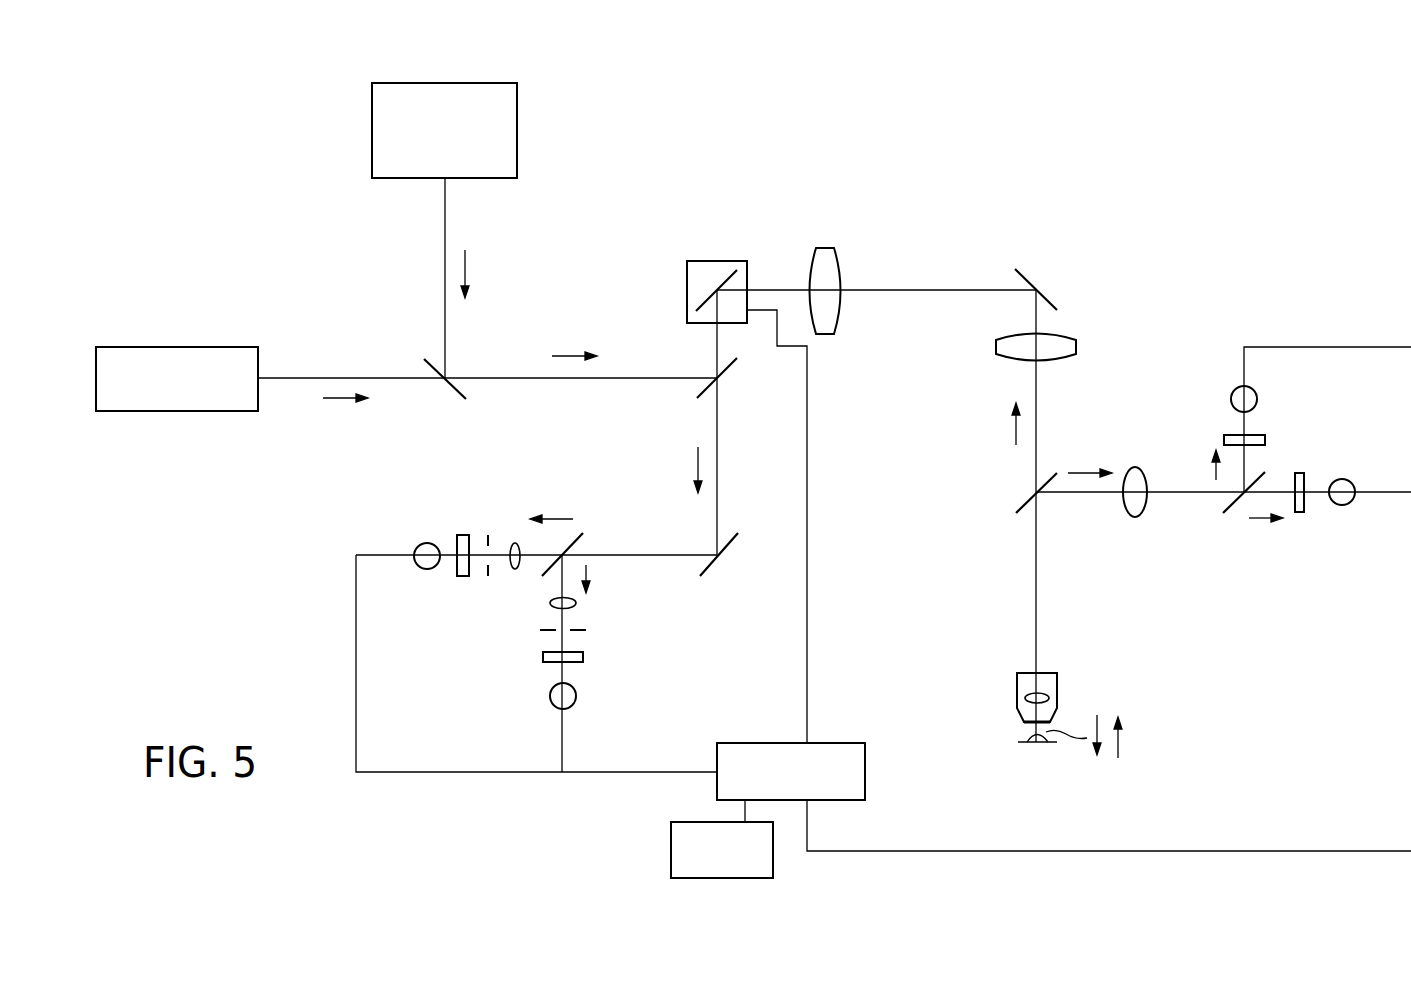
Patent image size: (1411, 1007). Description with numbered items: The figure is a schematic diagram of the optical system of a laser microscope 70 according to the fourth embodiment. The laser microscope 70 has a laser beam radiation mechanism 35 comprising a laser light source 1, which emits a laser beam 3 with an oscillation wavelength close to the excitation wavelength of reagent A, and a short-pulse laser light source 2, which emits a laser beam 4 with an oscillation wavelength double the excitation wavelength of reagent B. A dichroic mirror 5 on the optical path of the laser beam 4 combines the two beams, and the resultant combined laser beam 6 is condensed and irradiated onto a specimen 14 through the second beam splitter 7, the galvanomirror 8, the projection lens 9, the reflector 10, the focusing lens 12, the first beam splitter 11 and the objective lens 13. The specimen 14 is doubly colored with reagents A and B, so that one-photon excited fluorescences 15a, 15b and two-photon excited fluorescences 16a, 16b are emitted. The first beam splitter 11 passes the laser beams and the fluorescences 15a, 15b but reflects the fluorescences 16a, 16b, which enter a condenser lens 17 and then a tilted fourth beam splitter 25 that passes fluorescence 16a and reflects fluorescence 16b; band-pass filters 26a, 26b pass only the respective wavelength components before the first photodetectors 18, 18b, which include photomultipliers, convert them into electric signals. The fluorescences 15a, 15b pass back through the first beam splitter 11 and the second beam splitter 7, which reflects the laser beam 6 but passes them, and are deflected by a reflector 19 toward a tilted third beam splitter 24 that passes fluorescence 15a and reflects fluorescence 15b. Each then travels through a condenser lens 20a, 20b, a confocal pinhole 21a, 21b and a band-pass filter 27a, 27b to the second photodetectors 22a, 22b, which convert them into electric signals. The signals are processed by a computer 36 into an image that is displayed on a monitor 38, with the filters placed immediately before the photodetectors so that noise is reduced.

The laser light source 1 is at (518, 135).
The short-pulse laser light source 2 is at (184, 347).
The laser beam 3 is at (475, 274).
The laser beam 4 is at (345, 412).
The dichroic mirror 5 is at (450, 392).
The combined laser beam 6 is at (828, 541).
The second beam splitter 7 is at (727, 370).
The galvanomirror 8 is at (727, 270).
The projection lens 9 is at (822, 248).
The reflector 10 is at (1022, 269).
The first beam splitter 11 is at (1028, 497).
The focusing lens 12 is at (996, 342).
The objective lens 13 is at (1017, 688).
The specimen 14 is at (1027, 737).
The 1-photon excited fluorescence 15a is at (870, 599).
The 1-photon excited fluorescence 15b is at (795, 512).
The 2-photon excited fluorescence 16a is at (1175, 620).
The 2-photon excited fluorescence 16b is at (1141, 461).
The condenser lens 17 is at (1137, 518).
The first photodetector 18 is at (1343, 505).
The first photodetector 18b is at (1230, 397).
The reflector 19 is at (703, 583).
The condenser lens 20a is at (514, 568).
The condenser lens 20b is at (573, 603).
The confocal pinhole 21a is at (487, 574).
The confocal pinhole 21b is at (578, 629).
The second photodetector 22a is at (426, 542).
The second photodetector 22b is at (549, 696).
The third beam splitter 24 is at (578, 538).
The fourth beam splitter 25 is at (1235, 510).
The band-pass filter 26a is at (1302, 513).
The band-pass filter 26b is at (1267, 439).
The band-pass filter 27a is at (464, 533).
The band-pass filter 27b is at (543, 657).
The laser beam radiation mechanism 35 is at (507, 403).
The computer 36 is at (847, 742).
The monitor 38 is at (671, 852).
The laser microscope 70 is at (1145, 197).